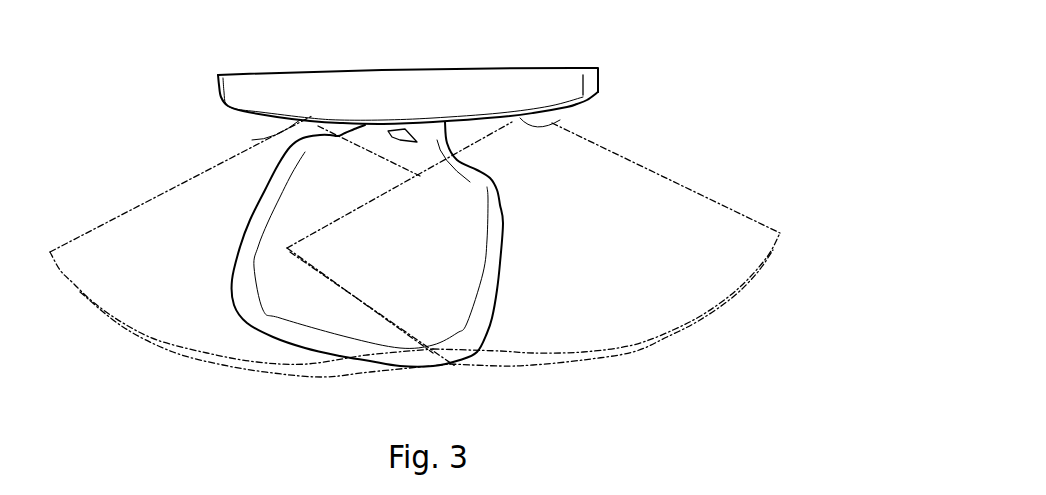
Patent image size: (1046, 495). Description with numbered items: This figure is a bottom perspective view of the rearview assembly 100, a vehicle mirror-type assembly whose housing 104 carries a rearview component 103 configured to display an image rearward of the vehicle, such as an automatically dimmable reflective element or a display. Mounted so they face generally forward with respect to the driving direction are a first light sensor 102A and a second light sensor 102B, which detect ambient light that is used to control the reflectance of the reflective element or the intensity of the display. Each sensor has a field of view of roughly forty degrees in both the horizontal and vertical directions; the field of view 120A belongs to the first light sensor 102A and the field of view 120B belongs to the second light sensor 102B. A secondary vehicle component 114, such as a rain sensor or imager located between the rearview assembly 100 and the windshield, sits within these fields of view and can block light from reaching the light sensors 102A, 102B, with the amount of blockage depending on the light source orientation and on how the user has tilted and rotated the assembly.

The rearview assembly 100 is at (652, 64).
The rearview component 103 is at (367, 70).
The housing 104 is at (508, 91).
The first light sensor 102A is at (560, 124).
The second light sensor 102B is at (262, 137).
The secondary vehicle component 114 is at (412, 368).
The field of view of the first light sensor 120A is at (700, 193).
The field of view of the second light sensor 120B is at (128, 202).